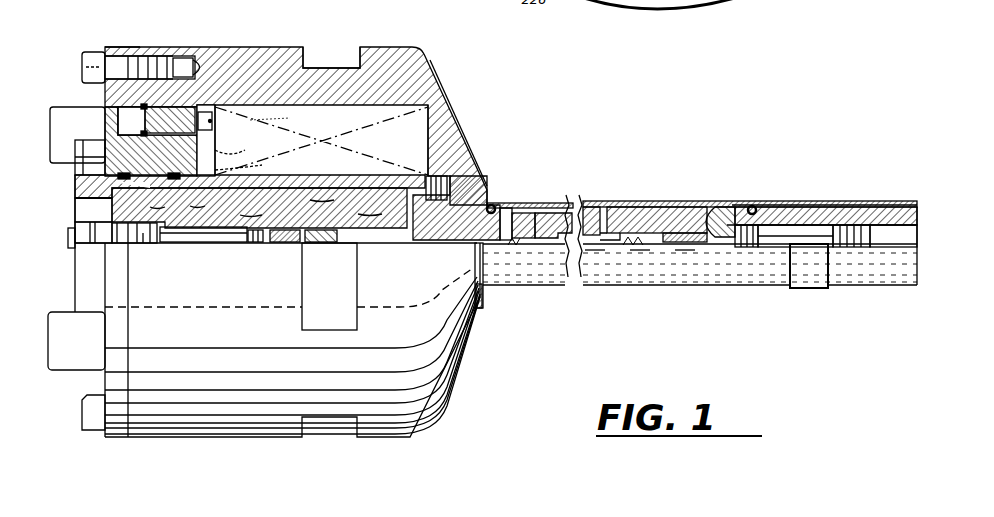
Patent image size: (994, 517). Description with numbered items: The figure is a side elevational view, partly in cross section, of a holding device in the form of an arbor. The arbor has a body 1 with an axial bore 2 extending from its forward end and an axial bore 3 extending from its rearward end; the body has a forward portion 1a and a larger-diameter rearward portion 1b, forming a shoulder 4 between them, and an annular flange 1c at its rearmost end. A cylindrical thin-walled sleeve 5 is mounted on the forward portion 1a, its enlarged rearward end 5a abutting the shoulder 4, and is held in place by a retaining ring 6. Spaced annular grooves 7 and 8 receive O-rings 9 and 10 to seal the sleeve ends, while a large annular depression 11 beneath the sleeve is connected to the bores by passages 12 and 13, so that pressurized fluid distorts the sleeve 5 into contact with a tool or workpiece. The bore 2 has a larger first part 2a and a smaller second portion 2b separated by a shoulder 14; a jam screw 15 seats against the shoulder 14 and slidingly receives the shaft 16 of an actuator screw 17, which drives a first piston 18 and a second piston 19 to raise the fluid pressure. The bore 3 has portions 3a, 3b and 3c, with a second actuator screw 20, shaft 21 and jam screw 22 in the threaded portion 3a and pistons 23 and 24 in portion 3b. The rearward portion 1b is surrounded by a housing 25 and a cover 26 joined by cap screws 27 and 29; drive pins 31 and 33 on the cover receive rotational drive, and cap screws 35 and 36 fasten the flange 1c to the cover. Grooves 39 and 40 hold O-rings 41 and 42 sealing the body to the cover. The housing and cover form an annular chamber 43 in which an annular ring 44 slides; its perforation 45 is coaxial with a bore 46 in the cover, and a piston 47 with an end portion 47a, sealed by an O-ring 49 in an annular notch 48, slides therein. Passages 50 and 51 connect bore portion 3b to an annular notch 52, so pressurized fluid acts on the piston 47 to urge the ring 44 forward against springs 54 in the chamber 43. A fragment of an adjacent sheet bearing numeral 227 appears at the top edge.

The body 1 is at (855, 272).
The forward portion 1a is at (690, 215).
The rearward portion 1b is at (395, 176).
The annular flange 1c is at (75, 183).
The axial bore 2 is at (640, 246).
The first part of bore 2a is at (794, 232).
The second portion of bore 2b is at (595, 246).
The axial bore 3 is at (376, 235).
The bore portion 3a is at (251, 212).
The bore portion 3b is at (370, 211).
The bore portion 3c is at (509, 224).
The shoulder 4 is at (470, 166).
The cylindrical thin-walled sleeve 5 is at (580, 200).
The enlarged rearward end 5a is at (462, 180).
The retaining ring 6 is at (828, 206).
The annular groove 7 is at (779, 205).
The annular groove 8 is at (494, 205).
The O-ring 9 is at (752, 207).
The O-ring 10 is at (526, 210).
The annular depression 11 is at (650, 215).
The passage 12 is at (612, 215).
The passage 13 is at (568, 200).
The shoulder 14 is at (715, 222).
The jam screw 15 is at (745, 247).
The shaft 16 is at (813, 262).
The actuator screw 17 is at (862, 235).
The first piston 18 is at (720, 246).
The second piston 19 is at (683, 246).
The actuator screw 20 is at (140, 243).
The shaft 21 is at (210, 243).
The jam screw 22 is at (252, 243).
The piston 23 is at (280, 243).
The piston 24 is at (313, 243).
The housing 25 is at (416, 58).
The cover 26 is at (122, 48).
The cap screw 27 is at (82, 63).
The cap screw 29 is at (90, 430).
The drive pin 31 is at (71, 126).
The drive pin 33 is at (72, 370).
The cap screw 35 is at (72, 173).
The cap screw 36 is at (68, 250).
The annular groove 39 is at (112, 212).
The annular groove 40 is at (175, 187).
The O-ring 41 is at (90, 195).
The O-ring 42 is at (216, 158).
The annular chamber 43 is at (310, 122).
The annular ring 44 is at (247, 165).
The perforation 45 is at (212, 124).
The bore 46 is at (160, 107).
The piston 47 is at (178, 113).
The end portion 47a is at (276, 113).
The annular notch 48 is at (135, 112).
The O-ring 49 is at (105, 99).
The passage 50 is at (418, 226).
The passage 51 is at (322, 198).
The annular notch 52 is at (140, 187).
The springs 54 is at (335, 128).
The fragment of adjacent figure 227 is at (618, 6).